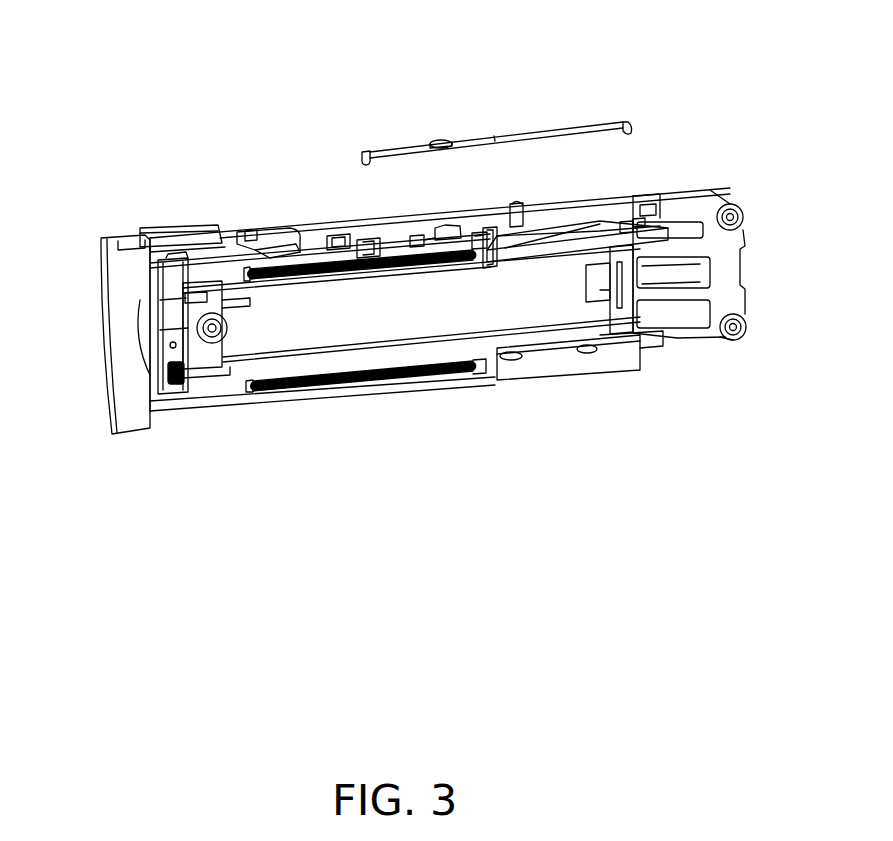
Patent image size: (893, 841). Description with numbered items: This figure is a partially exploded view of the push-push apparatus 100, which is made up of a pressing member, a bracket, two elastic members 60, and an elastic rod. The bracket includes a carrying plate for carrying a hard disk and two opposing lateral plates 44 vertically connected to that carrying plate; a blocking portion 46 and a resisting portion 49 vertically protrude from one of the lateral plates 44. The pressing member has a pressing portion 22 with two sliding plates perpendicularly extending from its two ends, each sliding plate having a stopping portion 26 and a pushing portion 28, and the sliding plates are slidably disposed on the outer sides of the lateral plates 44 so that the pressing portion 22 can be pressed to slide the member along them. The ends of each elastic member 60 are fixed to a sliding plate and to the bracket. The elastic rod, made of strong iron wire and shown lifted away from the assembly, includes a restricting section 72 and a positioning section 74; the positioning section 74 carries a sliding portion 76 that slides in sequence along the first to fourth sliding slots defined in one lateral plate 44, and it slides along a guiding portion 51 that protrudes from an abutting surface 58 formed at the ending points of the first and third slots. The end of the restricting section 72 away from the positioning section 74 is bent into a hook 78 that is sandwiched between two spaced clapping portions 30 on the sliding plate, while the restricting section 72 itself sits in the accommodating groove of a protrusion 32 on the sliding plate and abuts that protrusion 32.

The push-push apparatus 100 is at (351, 51).
The pressing portion 22 is at (120, 347).
The stopping portion 26 is at (440, 223).
The pushing portion 28 is at (478, 228).
The clapping portions 30 is at (348, 235).
The protrusion 32 is at (372, 243).
The lateral plates 44 is at (512, 232).
The blocking portion 46 is at (290, 228).
The resisting portion 49 is at (486, 228).
The guiding portion 51 is at (650, 208).
The abutting surface 58 is at (640, 222).
The elastic members 60 is at (222, 233).
The restricting section 72 is at (415, 146).
The positioning section 74 is at (489, 124).
The sliding portion 76 is at (627, 128).
The hook 78 is at (362, 154).